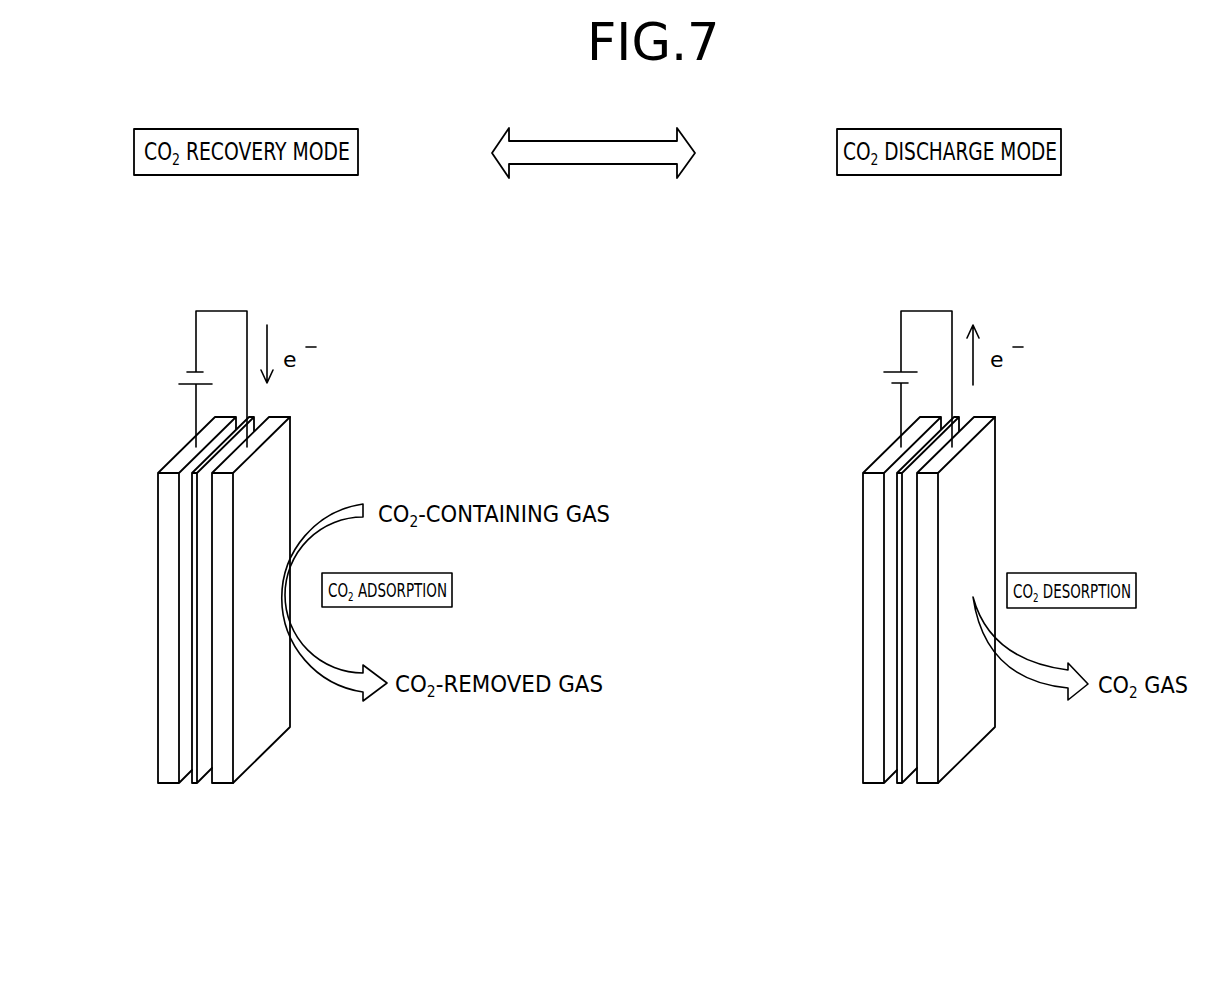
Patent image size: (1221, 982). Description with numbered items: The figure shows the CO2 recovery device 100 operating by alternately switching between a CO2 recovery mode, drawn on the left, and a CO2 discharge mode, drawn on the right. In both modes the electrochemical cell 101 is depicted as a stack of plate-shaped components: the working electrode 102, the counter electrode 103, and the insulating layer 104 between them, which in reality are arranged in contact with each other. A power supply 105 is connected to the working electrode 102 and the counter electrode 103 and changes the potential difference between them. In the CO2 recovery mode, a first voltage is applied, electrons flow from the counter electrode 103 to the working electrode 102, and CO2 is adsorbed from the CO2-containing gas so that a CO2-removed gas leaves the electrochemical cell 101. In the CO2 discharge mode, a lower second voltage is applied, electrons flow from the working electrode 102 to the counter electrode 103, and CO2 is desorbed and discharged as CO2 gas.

The CO2 recovery device 100 is at (627, 603).
The electrochemical cell 101 is at (272, 765).
The working electrode 102 is at (220, 785).
The counter electrode 103 is at (168, 785).
The insulating layer 104 is at (192, 785).
The power supply 105 is at (188, 386).